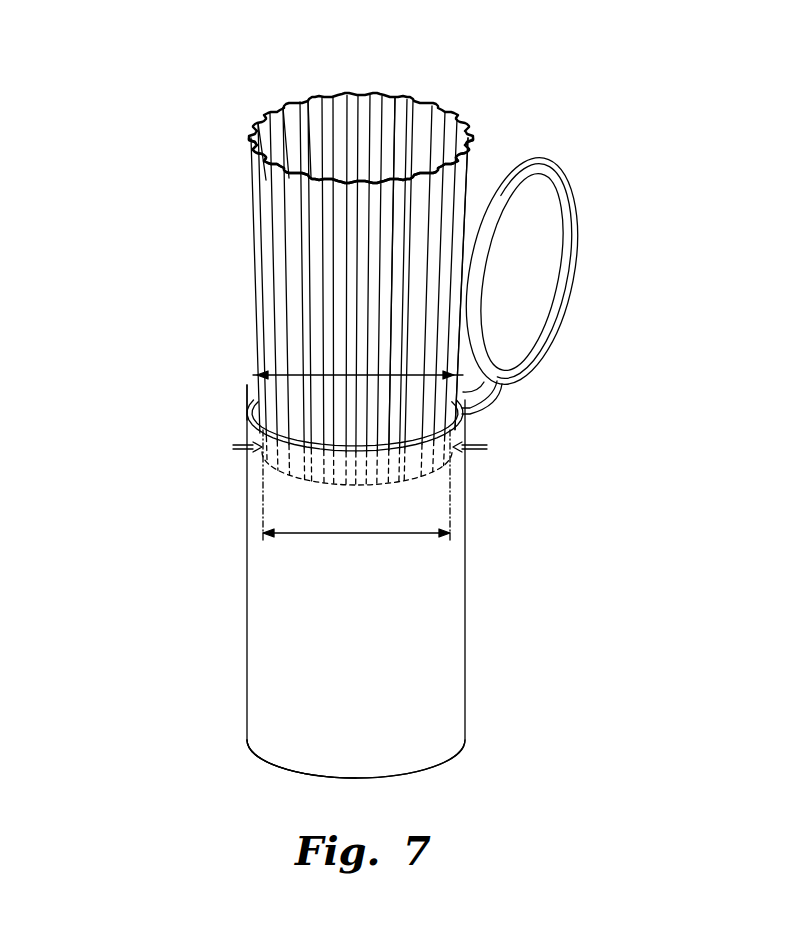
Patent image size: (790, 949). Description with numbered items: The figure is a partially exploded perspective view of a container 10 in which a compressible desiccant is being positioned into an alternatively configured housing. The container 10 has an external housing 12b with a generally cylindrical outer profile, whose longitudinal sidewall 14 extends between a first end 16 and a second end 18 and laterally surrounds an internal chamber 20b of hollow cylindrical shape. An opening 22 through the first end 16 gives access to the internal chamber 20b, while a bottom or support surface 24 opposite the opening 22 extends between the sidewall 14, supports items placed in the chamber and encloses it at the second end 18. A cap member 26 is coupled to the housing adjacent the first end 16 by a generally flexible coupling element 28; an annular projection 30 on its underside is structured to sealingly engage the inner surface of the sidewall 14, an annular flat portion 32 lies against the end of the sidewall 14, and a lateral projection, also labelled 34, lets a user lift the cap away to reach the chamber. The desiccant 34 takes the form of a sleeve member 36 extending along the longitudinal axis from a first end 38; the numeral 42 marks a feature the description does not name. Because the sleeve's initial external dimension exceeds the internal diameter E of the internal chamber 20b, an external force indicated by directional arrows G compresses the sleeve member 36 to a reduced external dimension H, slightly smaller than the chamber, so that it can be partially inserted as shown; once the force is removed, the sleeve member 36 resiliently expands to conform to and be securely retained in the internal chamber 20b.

The container 10 is at (347, 412).
The external housing 12b is at (403, 581).
The longitudinal sidewall 14 is at (321, 424).
The first end 16 is at (217, 366).
The second end 18 is at (393, 744).
The internal chamber 20b is at (321, 472).
The opening 22 is at (408, 273).
The bottom or support surface 24 is at (283, 774).
The cap member 26 is at (543, 271).
The coupling element 28 is at (512, 420).
The annular projection 30 is at (545, 272).
The annular flat portion 32 is at (517, 394).
The desiccant 34 is at (374, 266).
The sleeve member 36 is at (497, 272).
The first end 38 is at (386, 111).
The interior surface 42 is at (277, 98).
The diameter E is at (358, 346).
The directional arrows G is at (354, 448).
The reduced external dimension H is at (356, 507).